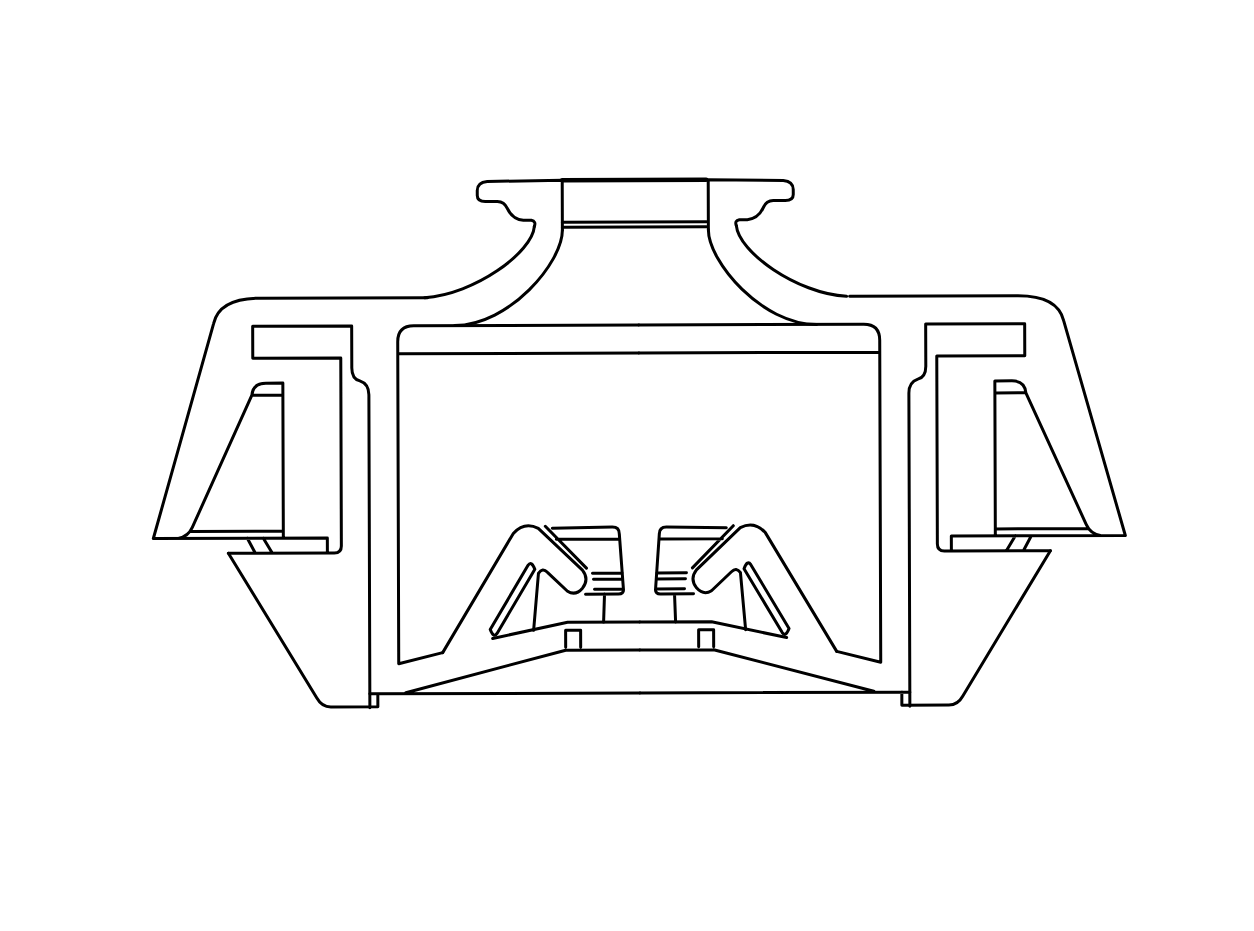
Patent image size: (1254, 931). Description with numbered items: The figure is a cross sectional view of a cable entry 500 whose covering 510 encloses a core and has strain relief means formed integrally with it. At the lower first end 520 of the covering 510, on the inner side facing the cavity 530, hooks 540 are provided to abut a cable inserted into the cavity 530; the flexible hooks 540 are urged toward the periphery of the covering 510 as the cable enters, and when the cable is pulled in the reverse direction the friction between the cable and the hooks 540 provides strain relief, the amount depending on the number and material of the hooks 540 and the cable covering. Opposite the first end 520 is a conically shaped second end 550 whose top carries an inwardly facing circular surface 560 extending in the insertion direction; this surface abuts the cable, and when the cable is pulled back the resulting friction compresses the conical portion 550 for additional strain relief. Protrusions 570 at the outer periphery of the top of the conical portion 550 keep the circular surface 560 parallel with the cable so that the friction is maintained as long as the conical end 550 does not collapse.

The cable entry 500 is at (685, 472).
The covering 510 is at (1048, 340).
The first end 520 is at (758, 673).
The cavity 530 is at (398, 618).
The hooks 540 is at (498, 587).
The conically shaped second end 550 is at (813, 307).
The circular surface 560 is at (695, 190).
The protrusions 570 is at (517, 195).